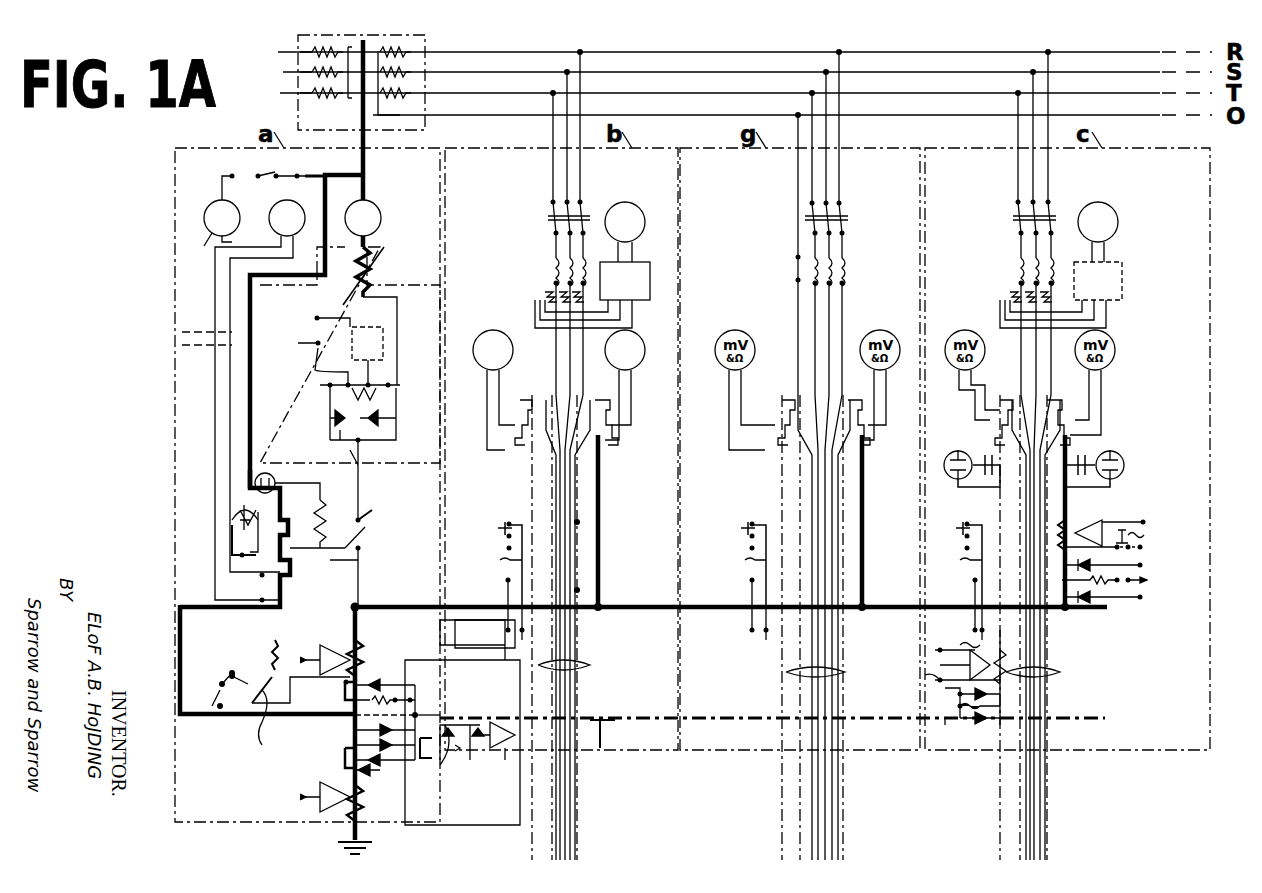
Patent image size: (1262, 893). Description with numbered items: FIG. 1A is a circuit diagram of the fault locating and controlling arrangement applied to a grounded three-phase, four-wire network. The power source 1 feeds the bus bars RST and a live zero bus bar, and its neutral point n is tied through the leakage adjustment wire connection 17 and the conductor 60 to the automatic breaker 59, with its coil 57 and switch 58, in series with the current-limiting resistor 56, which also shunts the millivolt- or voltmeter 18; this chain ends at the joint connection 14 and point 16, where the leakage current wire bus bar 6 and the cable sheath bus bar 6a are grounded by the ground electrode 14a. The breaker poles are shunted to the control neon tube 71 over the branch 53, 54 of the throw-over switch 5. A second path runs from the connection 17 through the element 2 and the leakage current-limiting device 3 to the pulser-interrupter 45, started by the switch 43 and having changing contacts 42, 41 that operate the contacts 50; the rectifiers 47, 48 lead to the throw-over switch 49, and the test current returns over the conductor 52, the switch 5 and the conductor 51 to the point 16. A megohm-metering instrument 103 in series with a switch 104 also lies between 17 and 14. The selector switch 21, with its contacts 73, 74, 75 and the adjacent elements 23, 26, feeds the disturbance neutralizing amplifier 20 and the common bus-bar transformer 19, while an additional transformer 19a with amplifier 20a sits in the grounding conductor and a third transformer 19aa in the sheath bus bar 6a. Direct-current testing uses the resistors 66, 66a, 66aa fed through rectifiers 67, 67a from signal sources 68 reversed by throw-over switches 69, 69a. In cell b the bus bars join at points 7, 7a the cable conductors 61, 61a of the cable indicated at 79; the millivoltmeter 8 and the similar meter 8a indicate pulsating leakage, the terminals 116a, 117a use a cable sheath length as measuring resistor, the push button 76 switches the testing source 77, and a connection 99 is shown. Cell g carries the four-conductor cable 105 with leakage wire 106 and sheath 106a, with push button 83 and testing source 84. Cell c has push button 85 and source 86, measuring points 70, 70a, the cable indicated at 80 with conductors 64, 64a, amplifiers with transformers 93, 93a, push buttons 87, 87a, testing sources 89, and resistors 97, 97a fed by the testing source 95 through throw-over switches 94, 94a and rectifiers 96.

The power source 1 is at (298, 60).
The leakage adjustment wire element 2 is at (381, 220).
The leakage current-limiting device 3 is at (372, 285).
The throw-over switch 5 is at (366, 528).
The leakage current wire bus bar 6 is at (600, 496).
The cable sheath bus bar 6a is at (532, 494).
The connection point 7 is at (610, 445).
The connection point 7a is at (520, 440).
The millivoltmeter 8 is at (640, 331).
The millivolt/ohm meter 8a is at (500, 328).
The joint connection 14 is at (350, 720).
The ground electrode 14a is at (345, 842).
The connection point 16 is at (355, 607).
The leakage adjustment wire connection 17 is at (365, 175).
The millivolt- or voltmeter 18 is at (300, 197).
The common bus-bar transformer 19 is at (360, 653).
The additional common bus-bar transformer 19a is at (360, 798).
The third common testing transformer 19aa is at (495, 718).
The disturbance neutralizing amplifier 20 is at (327, 648).
The amplifier 20a is at (300, 788).
The selector switch 21 is at (249, 719).
The switch 23 is at (272, 664).
The contact 26 is at (230, 670).
The two-way changing contact 41 is at (328, 410).
The two-way changing contact 42 is at (388, 398).
The switch 43 is at (316, 366).
The pulser-interrupter 45 is at (384, 350).
The rectifier 47 is at (330, 432).
The rectifier 48 is at (385, 420).
The throw-over switch 49 is at (362, 446).
The contacts 50 is at (328, 390).
The conductor 51 is at (362, 546).
The conductor 52 is at (362, 515).
The branch of throw-over switch 53 is at (327, 546).
The branch of throw-over switch 54 is at (317, 524).
The current-limiting resistor 56 is at (270, 588).
The coil 57 is at (240, 516).
The switch 58 is at (242, 554).
The automatic breaker 59 is at (280, 500).
The conductor 60 is at (250, 468).
The cable leakage current wire 61 is at (580, 798).
The cable sheath conductor 61a is at (578, 770).
The cable 64 is at (1045, 796).
The cable shield 64a is at (1010, 800).
The resistor 66 is at (346, 684).
The direct current testing equipment 66a is at (346, 754).
The direct current testing equipment 66aa is at (448, 758).
The rectifier 67 is at (378, 680).
The rectifier 67a is at (368, 770).
The alternating current signal source 68 is at (405, 690).
The throw-over switch 69 is at (412, 692).
The throw-over switch 69a is at (410, 748).
The measuring point 70 is at (1070, 438).
The measuring point 70a is at (1000, 438).
The control neon tube 71 is at (275, 478).
The contact 73 is at (228, 684).
The contact 74 is at (220, 706).
The contact 75 is at (198, 735).
The push button 76 is at (500, 524).
The testing signal current source 77 is at (496, 571).
The cable 79 is at (590, 666).
The cable 80 is at (1060, 673).
The push button 83 is at (742, 525).
The testing signal current source 84 is at (740, 571).
The push button 85 is at (962, 523).
The testing signal current source 86 is at (972, 571).
The push button 87 is at (1145, 535).
The testing source 89 is at (1140, 518).
The amplifier with transformer 93 is at (1085, 547).
The throw-over switch 94 is at (1148, 579).
The testing source 95 is at (1110, 580).
The rectifier 96 is at (1082, 610).
The resistor 97 is at (1073, 612).
The connection 99 is at (605, 733).
The megohm-metering instrument 103 is at (222, 236).
The switch 104 is at (238, 176).
The outgoing cable 105 is at (786, 673).
The leakage current wire 106 is at (838, 801).
The cable sheath 106a is at (795, 793).
The terminal 116a is at (580, 521).
The terminal 117a is at (580, 588).
The amplifier with transformer 93a is at (940, 648).
The push button 87a is at (960, 678).
The throw-over switch 94a is at (960, 704).
The resistor 97a is at (965, 725).